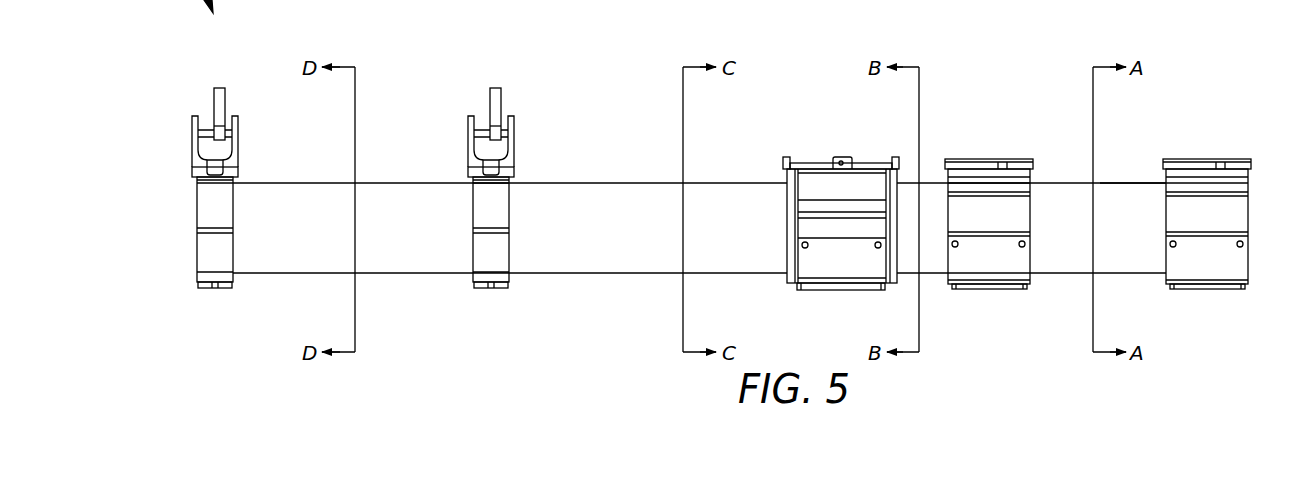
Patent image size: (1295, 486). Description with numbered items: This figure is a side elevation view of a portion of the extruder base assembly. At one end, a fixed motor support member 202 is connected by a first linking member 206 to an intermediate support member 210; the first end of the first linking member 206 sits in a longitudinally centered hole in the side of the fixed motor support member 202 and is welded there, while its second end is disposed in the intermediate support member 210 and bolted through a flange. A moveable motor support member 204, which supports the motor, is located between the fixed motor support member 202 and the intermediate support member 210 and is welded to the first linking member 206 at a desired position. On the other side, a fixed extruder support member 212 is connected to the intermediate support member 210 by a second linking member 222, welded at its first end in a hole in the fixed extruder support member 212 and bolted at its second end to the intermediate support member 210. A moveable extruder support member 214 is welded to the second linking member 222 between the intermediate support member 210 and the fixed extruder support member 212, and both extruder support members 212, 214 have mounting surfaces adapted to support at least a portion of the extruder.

The fixed motor support member 202 is at (1207, 143).
The moveable motor support member 204 is at (978, 152).
The first linking member 206 is at (1106, 192).
The intermediate support member 210 is at (815, 135).
The fixed extruder support member 212 is at (197, 80).
The moveable extruder support member 214 is at (492, 70).
The second linking member 222 is at (568, 202).